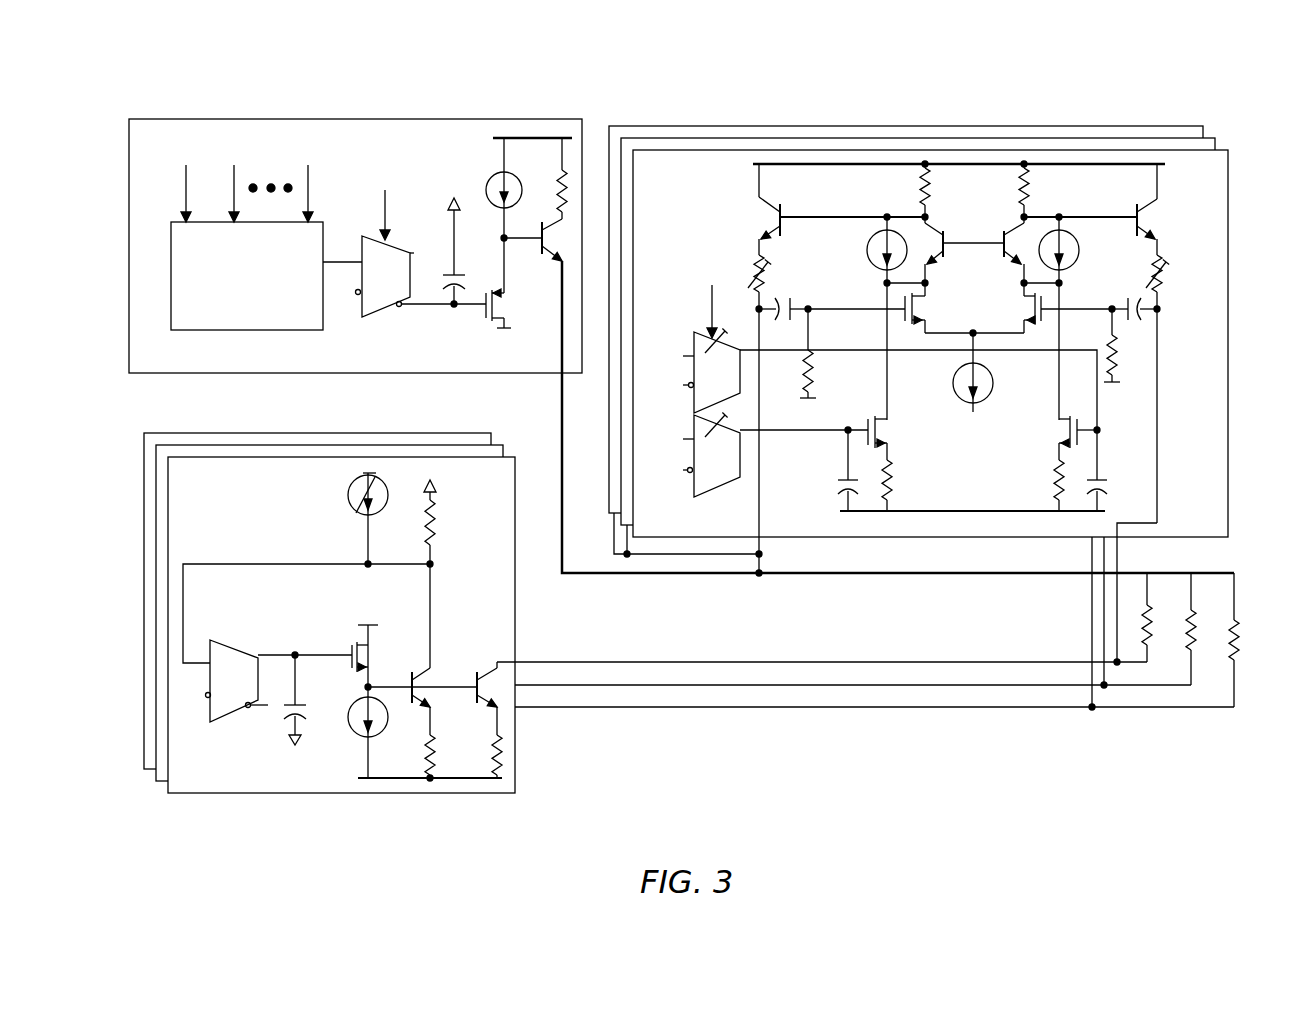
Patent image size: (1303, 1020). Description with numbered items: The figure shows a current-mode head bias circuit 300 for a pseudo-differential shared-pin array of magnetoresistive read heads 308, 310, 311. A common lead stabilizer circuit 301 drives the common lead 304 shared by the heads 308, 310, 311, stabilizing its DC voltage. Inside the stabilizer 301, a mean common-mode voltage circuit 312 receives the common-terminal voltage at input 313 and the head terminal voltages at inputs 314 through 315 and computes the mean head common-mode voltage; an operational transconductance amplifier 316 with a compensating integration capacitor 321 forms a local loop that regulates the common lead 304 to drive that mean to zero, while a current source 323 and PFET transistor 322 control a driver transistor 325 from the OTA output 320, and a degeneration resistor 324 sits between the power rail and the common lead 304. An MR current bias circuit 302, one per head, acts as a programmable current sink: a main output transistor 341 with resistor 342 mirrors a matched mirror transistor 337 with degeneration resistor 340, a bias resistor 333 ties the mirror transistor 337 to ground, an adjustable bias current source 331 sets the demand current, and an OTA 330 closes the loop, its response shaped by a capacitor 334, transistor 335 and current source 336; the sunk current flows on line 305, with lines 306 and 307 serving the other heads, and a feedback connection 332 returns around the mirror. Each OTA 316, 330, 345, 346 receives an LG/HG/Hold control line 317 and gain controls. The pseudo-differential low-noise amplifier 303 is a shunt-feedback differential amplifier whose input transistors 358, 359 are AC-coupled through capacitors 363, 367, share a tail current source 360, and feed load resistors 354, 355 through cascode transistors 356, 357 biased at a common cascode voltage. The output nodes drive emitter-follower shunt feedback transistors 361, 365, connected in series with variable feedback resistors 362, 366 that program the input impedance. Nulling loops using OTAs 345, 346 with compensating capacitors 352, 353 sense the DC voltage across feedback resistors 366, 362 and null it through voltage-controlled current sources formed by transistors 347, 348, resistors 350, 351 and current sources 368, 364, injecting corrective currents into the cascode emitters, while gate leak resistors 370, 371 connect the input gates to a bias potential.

The current-mode head bias circuit 300 is at (1165, 85).
The common lead stabilizer circuit 301 is at (203, 362).
The MR current bias circuit 302 is at (228, 787).
The low-noise amplifier 303 is at (739, 531).
The common lead 304 is at (708, 577).
The line 305 is at (862, 660).
The bias line 306 is at (906, 683).
The bias line 307 is at (950, 705).
The MR read head 308 is at (1152, 623).
The MR read head 310 is at (1194, 637).
The MR read head 311 is at (1238, 650).
The mean common-mode voltage circuit 312 is at (263, 320).
The input 313 is at (184, 181).
The input 314 is at (232, 181).
The input 315 is at (307, 181).
The operational transconductance amplifier 316 is at (401, 299).
The HG/LG/Hold control signal 317 is at (387, 198).
The output 320 is at (427, 308).
The compensating integration capacitor 321 is at (458, 274).
The transistor 322 is at (485, 320).
The current source 323 is at (487, 194).
The degeneration resistor 324 is at (560, 178).
The driver transistor 325 is at (537, 254).
The OTA 330 is at (250, 704).
The adjustable bias current source 331 is at (348, 506).
The feedback connection 332 is at (214, 562).
The bias resistor 333 is at (436, 530).
The capacitor 334 is at (300, 703).
The transistor 335 is at (350, 648).
The current source 336 is at (348, 728).
The matched mirror transistor 337 is at (410, 677).
The degeneration resistor 340 is at (423, 750).
The main output transistor 341 is at (475, 677).
The resistor 342 is at (490, 750).
The OTA 345 is at (733, 395).
The OTA 346 is at (733, 477).
The transistor 347 is at (1080, 419).
The transistor 348 is at (866, 421).
The resistor 350 is at (1057, 465).
The resistor 351 is at (894, 487).
The compensating capacitor 352 is at (1103, 478).
The compensating capacitor 353 is at (846, 478).
The load resistor 354 is at (920, 183).
The load resistor 355 is at (1030, 183).
The cascode transistor 356 is at (947, 263).
The cascode transistor 357 is at (1000, 263).
The input transistor 358 is at (903, 315).
The input transistor 359 is at (1044, 318).
The tail current source 360 is at (955, 393).
The shunt feedback transistor 361 is at (783, 206).
The variable feedback resistor 362 is at (769, 280).
The AC coupling capacitor 363 is at (796, 302).
The current source 364 is at (868, 247).
The shunt feedback transistor 365 is at (1134, 208).
The variable feedback resistor 366 is at (1168, 276).
The AC coupling capacitor 367 is at (1126, 298).
The current source 368 is at (1080, 258).
The gate leak resistor 370 is at (815, 368).
The gate leak resistor 371 is at (1113, 345).